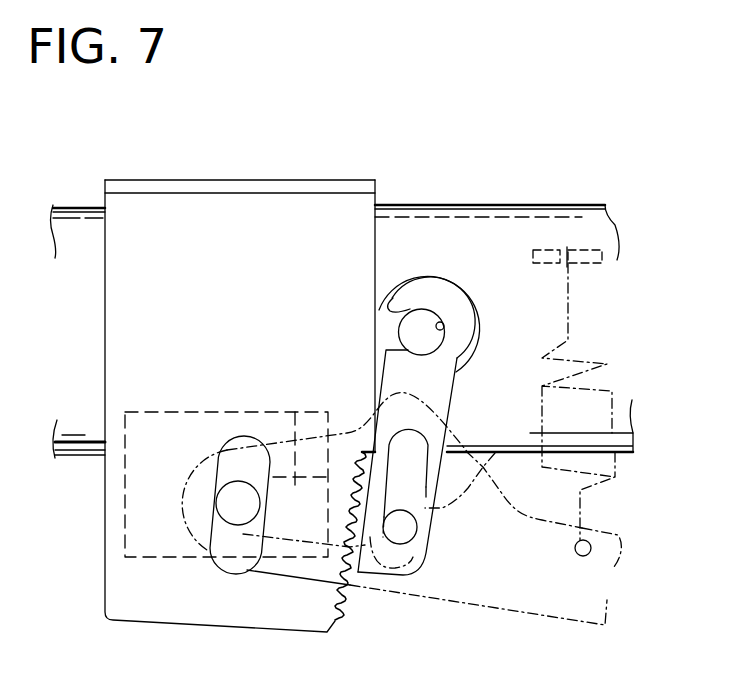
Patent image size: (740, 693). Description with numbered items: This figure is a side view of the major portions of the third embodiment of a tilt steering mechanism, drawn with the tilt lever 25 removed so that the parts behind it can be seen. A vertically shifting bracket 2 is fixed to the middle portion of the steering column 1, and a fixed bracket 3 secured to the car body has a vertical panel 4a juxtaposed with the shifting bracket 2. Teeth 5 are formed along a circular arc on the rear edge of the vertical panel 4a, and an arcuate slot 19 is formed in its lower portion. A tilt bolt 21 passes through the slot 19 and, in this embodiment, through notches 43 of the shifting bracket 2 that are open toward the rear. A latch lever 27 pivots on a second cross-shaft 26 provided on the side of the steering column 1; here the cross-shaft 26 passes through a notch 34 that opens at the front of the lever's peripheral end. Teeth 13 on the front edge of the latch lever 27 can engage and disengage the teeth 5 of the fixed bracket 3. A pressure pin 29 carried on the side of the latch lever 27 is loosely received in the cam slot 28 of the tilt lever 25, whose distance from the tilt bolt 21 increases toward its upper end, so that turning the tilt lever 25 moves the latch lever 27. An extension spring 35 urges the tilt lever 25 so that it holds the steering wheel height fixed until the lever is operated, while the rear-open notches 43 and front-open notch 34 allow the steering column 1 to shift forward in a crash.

The steering column 1 is at (467, 230).
The vertically shifting bracket 2 is at (155, 548).
The fixed bracket 3 is at (163, 178).
The vertical panel 4a is at (275, 207).
The teeth 5 is at (353, 593).
The teeth 13 is at (352, 537).
The slot 19 is at (238, 540).
The tilt bolt 21 is at (244, 518).
The tilt lever 25 is at (628, 547).
The second cross-shaft 26 is at (414, 310).
The latch lever 27 is at (437, 395).
The slot 28 is at (449, 437).
The pressure pin 29 is at (407, 538).
The notch 34 is at (443, 322).
The extension spring 35 is at (590, 362).
The notches 43 is at (296, 412).